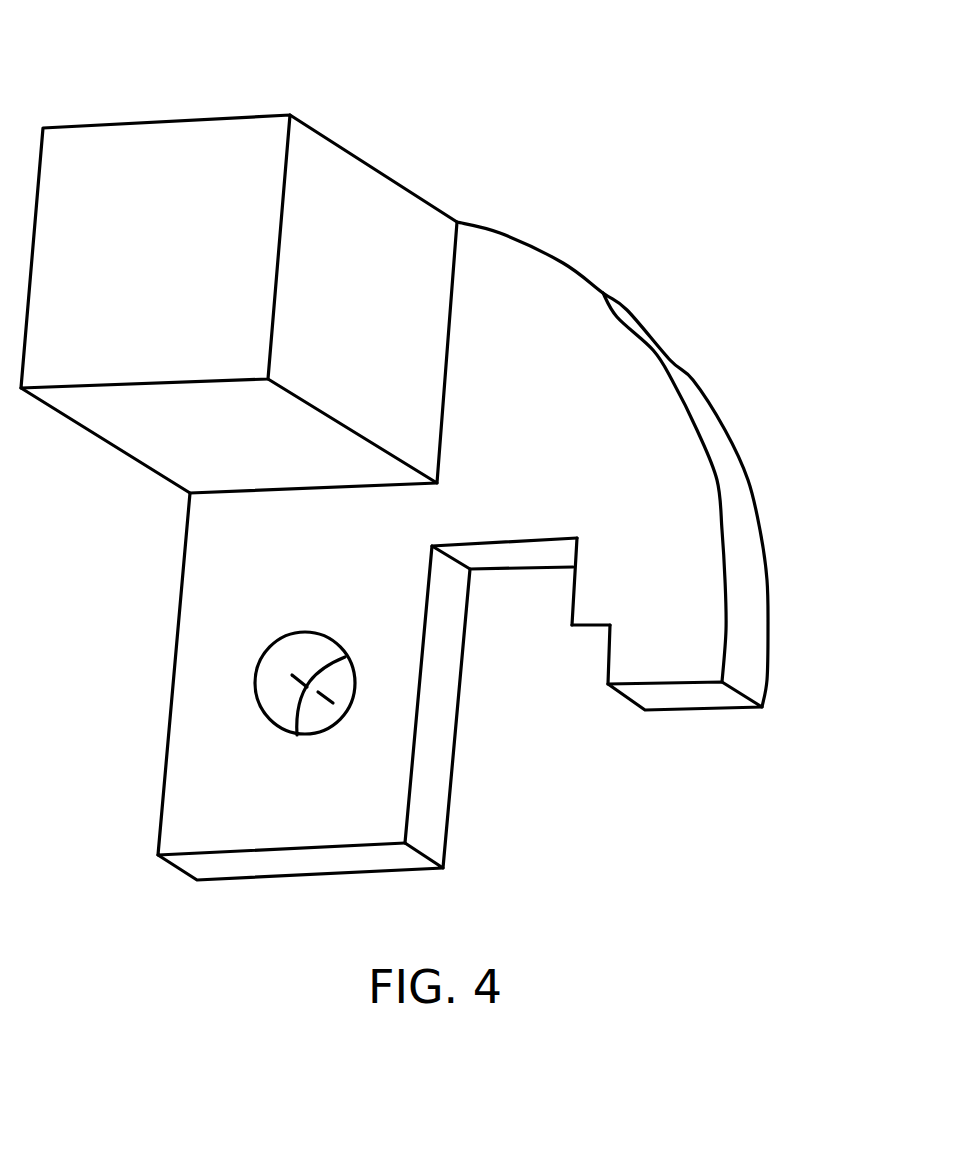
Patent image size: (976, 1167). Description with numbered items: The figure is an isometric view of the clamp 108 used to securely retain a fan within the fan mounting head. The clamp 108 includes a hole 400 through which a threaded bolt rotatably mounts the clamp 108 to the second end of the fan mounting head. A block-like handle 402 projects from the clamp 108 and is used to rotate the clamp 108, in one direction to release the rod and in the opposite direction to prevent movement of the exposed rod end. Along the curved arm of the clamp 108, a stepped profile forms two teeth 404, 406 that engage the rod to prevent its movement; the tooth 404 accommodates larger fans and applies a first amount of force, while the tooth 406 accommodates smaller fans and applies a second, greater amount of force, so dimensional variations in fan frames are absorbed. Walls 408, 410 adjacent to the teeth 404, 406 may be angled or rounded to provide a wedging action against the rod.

The clamp 108 is at (455, 447).
The hole 400 is at (244, 687).
The handle 402 is at (116, 113).
The tooth 404 is at (592, 639).
The tooth 406 is at (495, 585).
The wall 408 is at (626, 650).
The wall 410 is at (588, 577).